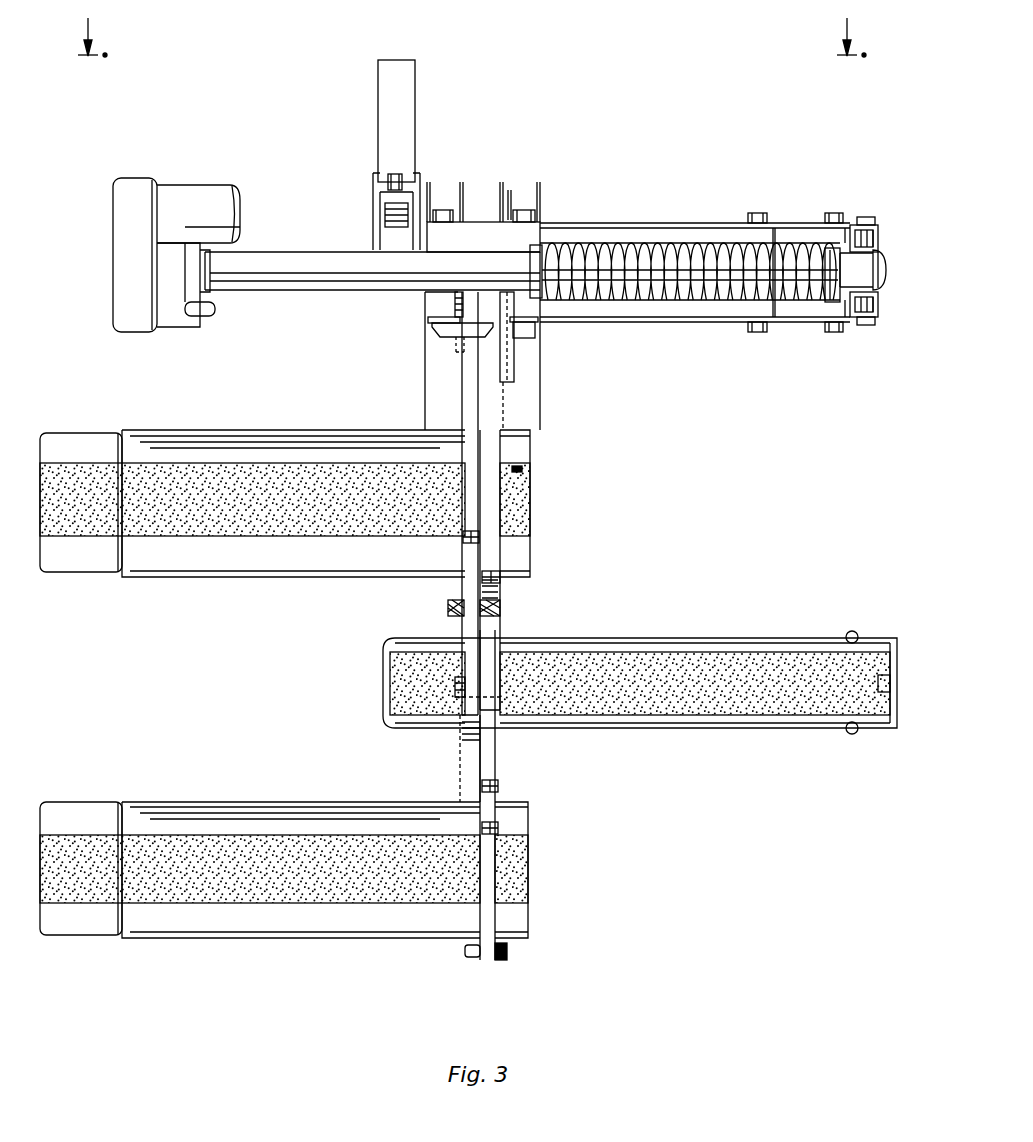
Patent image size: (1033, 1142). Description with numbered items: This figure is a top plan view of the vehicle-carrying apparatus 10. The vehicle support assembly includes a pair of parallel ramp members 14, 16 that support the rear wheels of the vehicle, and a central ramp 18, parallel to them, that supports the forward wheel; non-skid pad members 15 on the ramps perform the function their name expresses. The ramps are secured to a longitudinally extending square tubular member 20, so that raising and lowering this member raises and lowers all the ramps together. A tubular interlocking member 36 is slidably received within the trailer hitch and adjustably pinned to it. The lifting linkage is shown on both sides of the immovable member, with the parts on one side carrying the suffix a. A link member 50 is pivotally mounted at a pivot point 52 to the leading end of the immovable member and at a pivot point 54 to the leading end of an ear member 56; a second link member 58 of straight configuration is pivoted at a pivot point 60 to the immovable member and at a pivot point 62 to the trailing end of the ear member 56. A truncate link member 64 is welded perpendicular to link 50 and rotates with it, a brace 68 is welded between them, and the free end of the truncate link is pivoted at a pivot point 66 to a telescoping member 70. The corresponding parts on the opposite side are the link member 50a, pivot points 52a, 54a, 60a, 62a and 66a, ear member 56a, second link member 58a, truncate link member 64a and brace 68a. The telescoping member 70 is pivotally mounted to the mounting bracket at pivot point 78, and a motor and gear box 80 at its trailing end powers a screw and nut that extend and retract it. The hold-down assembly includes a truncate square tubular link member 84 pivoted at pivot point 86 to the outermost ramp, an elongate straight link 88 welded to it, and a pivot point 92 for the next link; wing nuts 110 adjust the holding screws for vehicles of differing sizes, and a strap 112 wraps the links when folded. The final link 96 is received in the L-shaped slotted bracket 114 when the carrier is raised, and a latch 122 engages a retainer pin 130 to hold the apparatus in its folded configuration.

The apparatus 10 is at (76, 87).
The ramp member 14 is at (250, 432).
The non-skid pad members 15 is at (92, 475).
The ramp member 16 is at (130, 810).
The central ramp 18 is at (680, 640).
The square tubular member 20 is at (466, 758).
The tubular interlocking member 36 is at (412, 66).
The link member 50 is at (800, 310).
The link member 50a is at (795, 240).
The pivot point 52 is at (833, 332).
The pivot point 52a is at (833, 213).
The pivot point 54 is at (535, 330).
The pivot point 54a is at (522, 212).
The ear member 56 is at (428, 298).
The ear member 56a is at (480, 222).
The second link member 58 is at (655, 304).
The second link member 58a is at (680, 240).
The pivot point 60 is at (757, 332).
The pivot point 60a is at (757, 213).
The pivot point 62 is at (440, 330).
The pivot point 62a is at (443, 210).
The truncate link member 64 is at (882, 290).
The truncate link member 64a is at (882, 250).
The pivot point 66 is at (866, 325).
The pivot point 66a is at (866, 225).
The brace 68 is at (560, 322).
The brace 68a is at (597, 223).
The telescoping member 70 is at (292, 252).
The pivot point 78 is at (385, 228).
The motor and gear box 80 is at (190, 190).
The truncate square tubular link member 84 is at (477, 960).
The pivot point 86 is at (503, 955).
The elongate straight link 88 is at (487, 883).
The pivot point 92 is at (500, 680).
The final link 96 is at (455, 352).
The wing nuts 110 is at (500, 575).
The strap 112 is at (447, 607).
The bracket 114 is at (463, 345).
The latch 122 is at (514, 380).
The retainer pin 130 is at (522, 470).